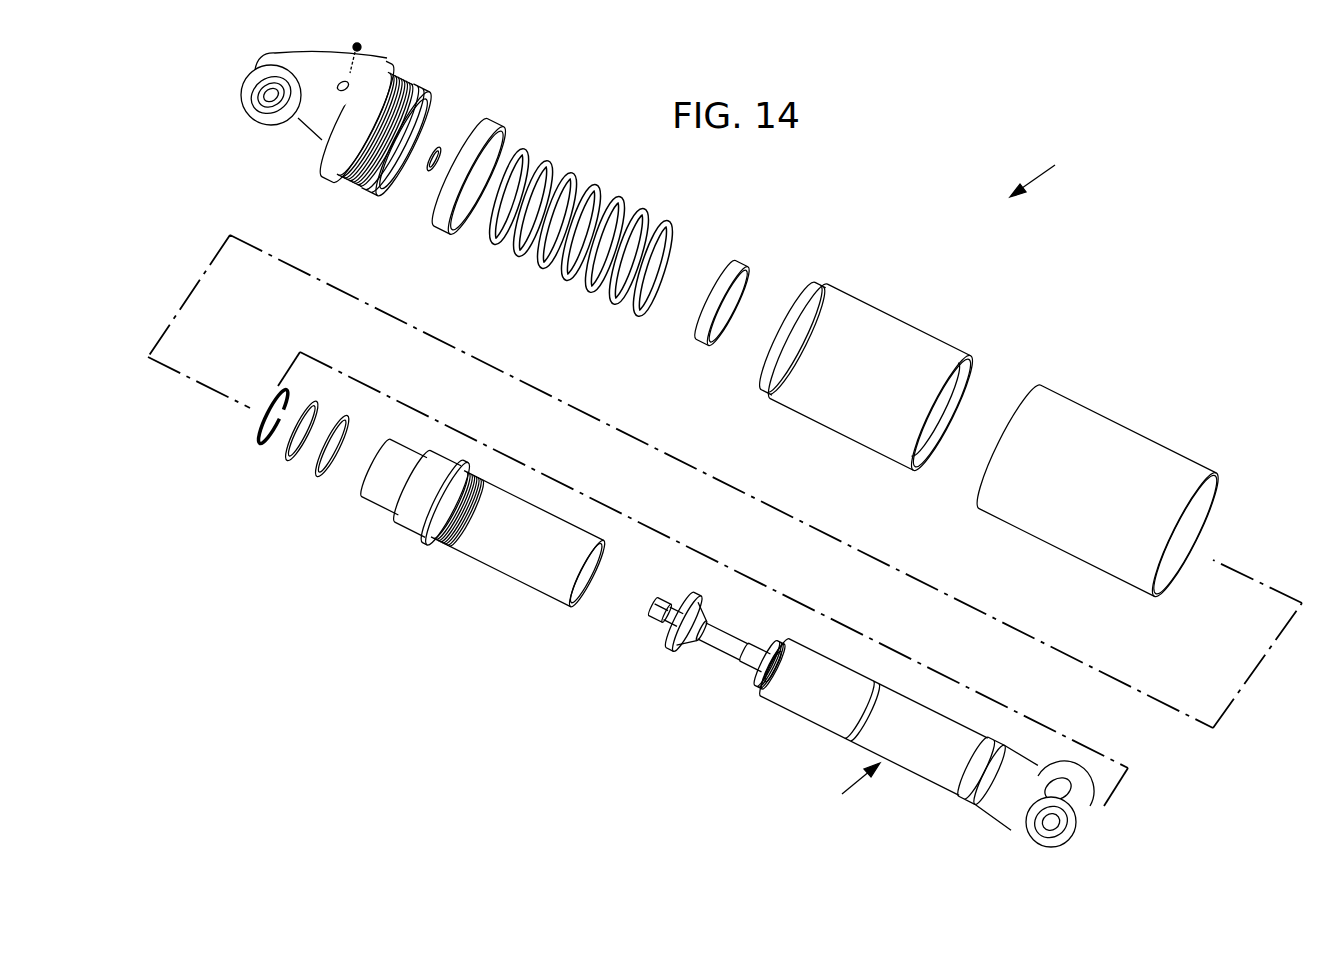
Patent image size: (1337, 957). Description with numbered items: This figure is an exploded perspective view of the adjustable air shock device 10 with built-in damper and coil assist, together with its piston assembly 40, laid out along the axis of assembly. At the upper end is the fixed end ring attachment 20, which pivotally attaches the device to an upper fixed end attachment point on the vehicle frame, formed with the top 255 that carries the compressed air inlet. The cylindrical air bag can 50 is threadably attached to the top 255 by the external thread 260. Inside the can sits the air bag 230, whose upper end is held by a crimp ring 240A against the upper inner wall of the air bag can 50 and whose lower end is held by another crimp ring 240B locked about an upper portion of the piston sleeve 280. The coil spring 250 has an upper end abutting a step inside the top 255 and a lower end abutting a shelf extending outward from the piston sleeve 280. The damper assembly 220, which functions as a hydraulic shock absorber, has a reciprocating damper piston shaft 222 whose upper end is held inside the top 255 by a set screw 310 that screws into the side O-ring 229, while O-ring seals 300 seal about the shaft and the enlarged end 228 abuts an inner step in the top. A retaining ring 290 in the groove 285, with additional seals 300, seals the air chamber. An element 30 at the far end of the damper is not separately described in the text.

The adjustable air shock device 10 is at (1049, 171).
The fixed end ring attachment 20 is at (260, 108).
The lower eyelet mount 30 is at (1051, 847).
The piston assembly 40 is at (1128, 768).
The air bag can 50 is at (1117, 443).
The damper assembly 220 is at (898, 732).
The damper piston shaft 222 is at (737, 652).
The enlarged end 228 is at (685, 647).
The side O-ring 229 is at (655, 613).
The air bag 230 is at (905, 345).
The crimp ring 240A is at (492, 123).
The crimp ring 240B is at (735, 267).
The coil spring 250 is at (573, 177).
The top 255 is at (323, 143).
The external thread 260 is at (342, 185).
The piston sleeve 280 is at (468, 542).
The groove 285 is at (763, 690).
The retaining ring 290 is at (258, 443).
The O-ring seals 300 is at (428, 172).
The set screw 310 is at (365, 45).